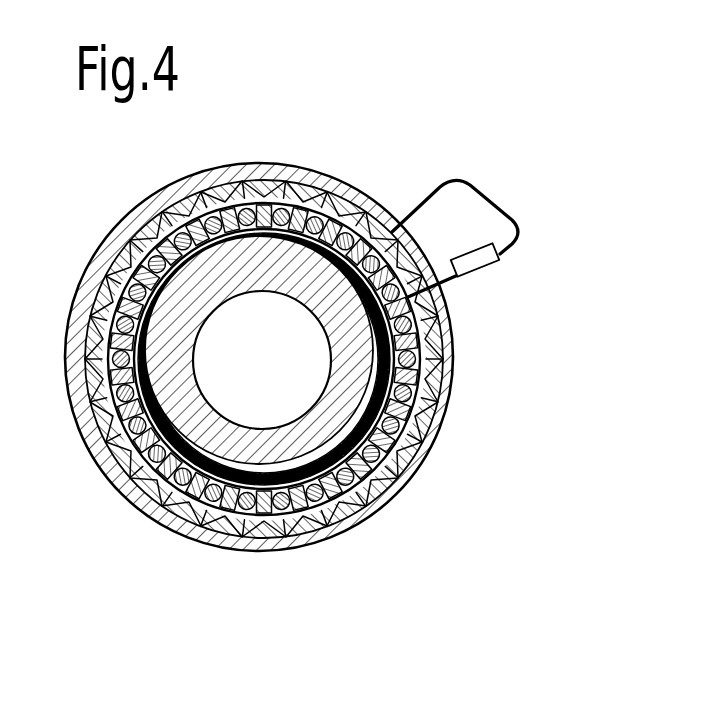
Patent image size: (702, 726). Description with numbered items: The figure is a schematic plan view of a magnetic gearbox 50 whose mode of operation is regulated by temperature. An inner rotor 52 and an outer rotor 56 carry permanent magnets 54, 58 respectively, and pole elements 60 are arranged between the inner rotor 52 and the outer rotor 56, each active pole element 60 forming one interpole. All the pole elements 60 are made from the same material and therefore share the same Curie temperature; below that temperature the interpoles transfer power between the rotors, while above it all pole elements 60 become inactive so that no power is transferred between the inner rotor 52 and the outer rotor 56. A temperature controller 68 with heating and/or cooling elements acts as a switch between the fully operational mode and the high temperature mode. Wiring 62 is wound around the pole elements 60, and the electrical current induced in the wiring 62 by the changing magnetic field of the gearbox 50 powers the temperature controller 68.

The gearbox 50 is at (92, 219).
The inner rotor 52 is at (205, 408).
The permanent magnets 54 is at (377, 495).
The outer rotor 56 is at (143, 502).
The permanent magnets 58 is at (425, 455).
The pole elements 60 is at (458, 383).
The wiring 62 is at (453, 321).
The temperature controller 68 is at (490, 268).